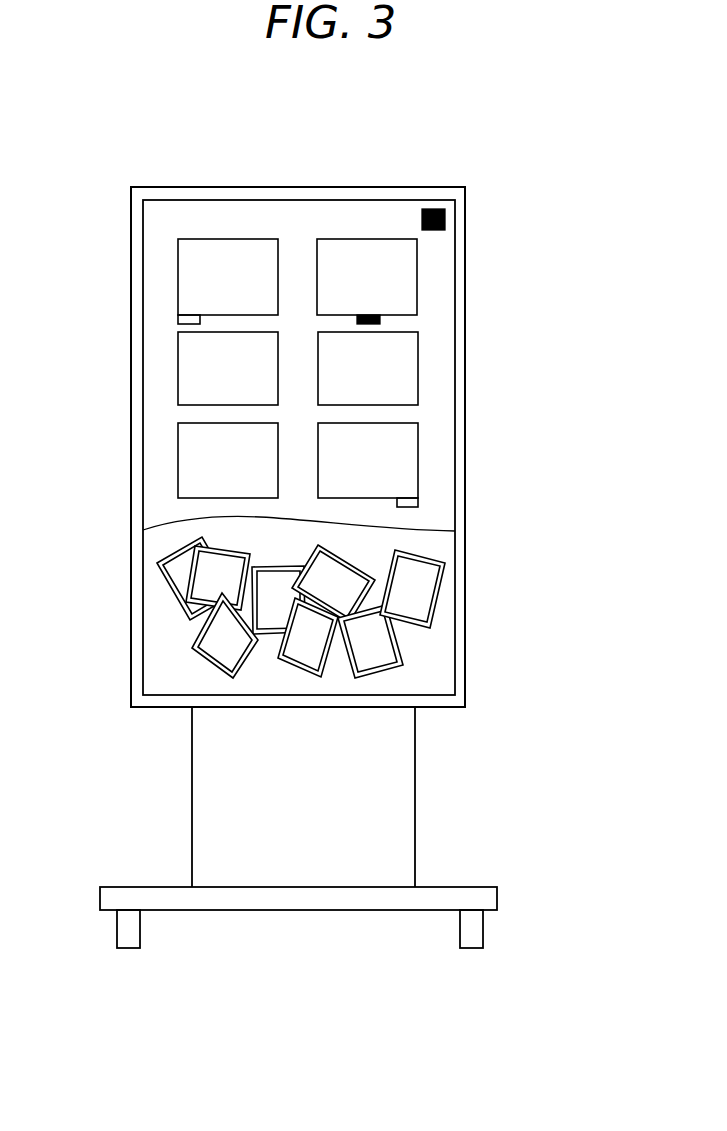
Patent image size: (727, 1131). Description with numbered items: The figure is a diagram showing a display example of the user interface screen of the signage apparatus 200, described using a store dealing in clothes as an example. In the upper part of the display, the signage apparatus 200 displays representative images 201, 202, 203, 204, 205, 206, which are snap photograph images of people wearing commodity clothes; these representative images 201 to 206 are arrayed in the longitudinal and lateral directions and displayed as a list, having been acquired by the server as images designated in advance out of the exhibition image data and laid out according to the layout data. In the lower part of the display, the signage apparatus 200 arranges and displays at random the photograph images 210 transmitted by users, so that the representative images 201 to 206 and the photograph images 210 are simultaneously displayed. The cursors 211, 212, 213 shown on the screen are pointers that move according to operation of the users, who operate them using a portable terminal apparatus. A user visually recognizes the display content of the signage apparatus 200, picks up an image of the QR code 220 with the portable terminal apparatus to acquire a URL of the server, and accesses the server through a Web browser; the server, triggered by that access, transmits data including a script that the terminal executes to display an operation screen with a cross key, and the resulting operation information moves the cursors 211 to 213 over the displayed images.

The signage apparatus 200 is at (518, 124).
The representative image 201 is at (204, 237).
The representative image 202 is at (353, 237).
The representative image 203 is at (177, 377).
The representative image 204 is at (424, 367).
The representative image 205 is at (177, 467).
The representative image 206 is at (424, 457).
The photograph image 210 is at (381, 649).
The cursor 211 is at (176, 320).
The cursor 212 is at (374, 311).
The cursor 213 is at (424, 500).
The QR code 220 is at (447, 214).